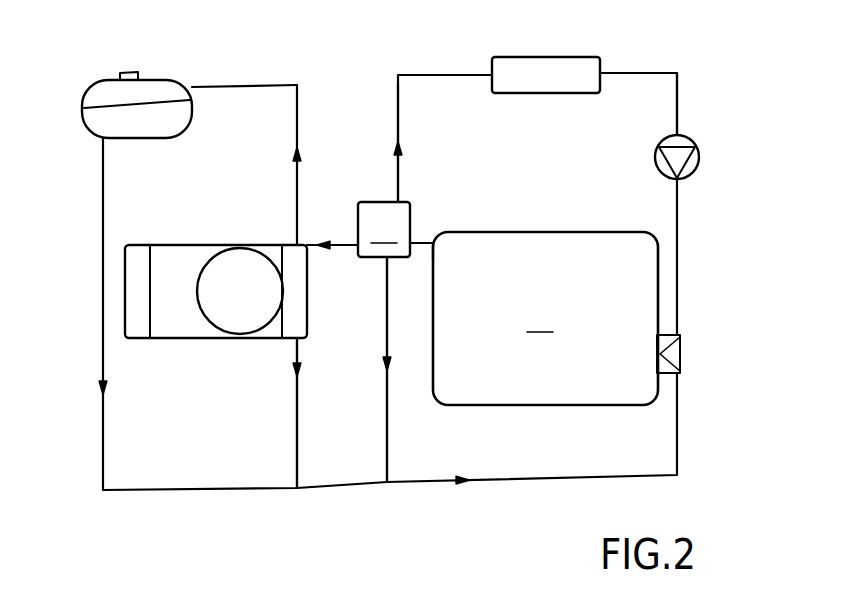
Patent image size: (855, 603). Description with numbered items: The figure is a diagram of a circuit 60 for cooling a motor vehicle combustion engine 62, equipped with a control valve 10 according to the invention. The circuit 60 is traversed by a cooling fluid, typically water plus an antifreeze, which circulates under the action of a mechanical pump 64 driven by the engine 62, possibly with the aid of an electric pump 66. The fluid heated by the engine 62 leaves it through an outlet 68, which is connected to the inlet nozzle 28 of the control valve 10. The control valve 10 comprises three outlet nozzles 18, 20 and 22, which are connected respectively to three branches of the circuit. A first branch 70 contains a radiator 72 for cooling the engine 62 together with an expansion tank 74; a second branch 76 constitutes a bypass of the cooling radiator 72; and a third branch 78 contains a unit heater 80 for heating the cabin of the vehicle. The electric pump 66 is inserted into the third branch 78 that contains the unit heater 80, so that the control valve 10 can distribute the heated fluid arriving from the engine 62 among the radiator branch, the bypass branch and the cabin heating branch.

The control valve 10 is at (384, 229).
The outlet nozzle 18 is at (392, 258).
The outlet nozzle 20 is at (352, 249).
The outlet nozzle 22 is at (395, 202).
The inlet nozzle 28 is at (417, 236).
The circuit 60 is at (203, 516).
The motor vehicle combustion engine 62 is at (545, 318).
The mechanical pump 64 is at (683, 360).
The electric pump 66 is at (700, 168).
The outlet 68 is at (437, 233).
The first branch 70 is at (297, 425).
The radiator 72 is at (200, 330).
The expansion tank 74 is at (97, 80).
The second branch 76 is at (387, 450).
The third branch 78 is at (645, 70).
The unit heater 80 is at (540, 57).